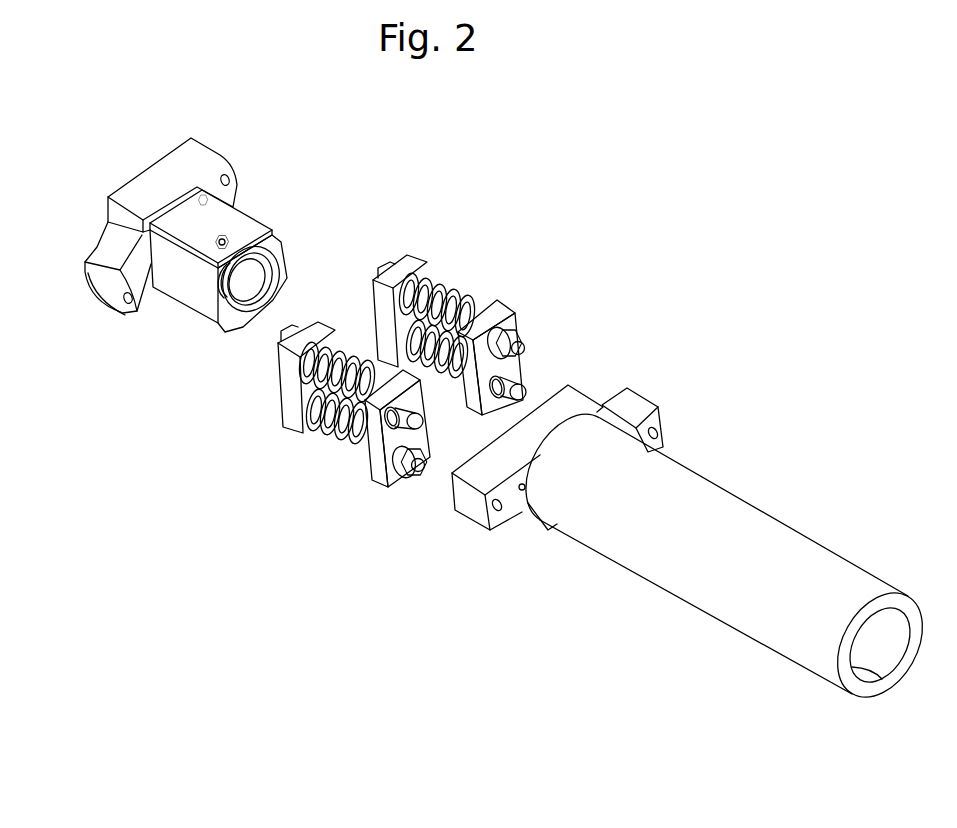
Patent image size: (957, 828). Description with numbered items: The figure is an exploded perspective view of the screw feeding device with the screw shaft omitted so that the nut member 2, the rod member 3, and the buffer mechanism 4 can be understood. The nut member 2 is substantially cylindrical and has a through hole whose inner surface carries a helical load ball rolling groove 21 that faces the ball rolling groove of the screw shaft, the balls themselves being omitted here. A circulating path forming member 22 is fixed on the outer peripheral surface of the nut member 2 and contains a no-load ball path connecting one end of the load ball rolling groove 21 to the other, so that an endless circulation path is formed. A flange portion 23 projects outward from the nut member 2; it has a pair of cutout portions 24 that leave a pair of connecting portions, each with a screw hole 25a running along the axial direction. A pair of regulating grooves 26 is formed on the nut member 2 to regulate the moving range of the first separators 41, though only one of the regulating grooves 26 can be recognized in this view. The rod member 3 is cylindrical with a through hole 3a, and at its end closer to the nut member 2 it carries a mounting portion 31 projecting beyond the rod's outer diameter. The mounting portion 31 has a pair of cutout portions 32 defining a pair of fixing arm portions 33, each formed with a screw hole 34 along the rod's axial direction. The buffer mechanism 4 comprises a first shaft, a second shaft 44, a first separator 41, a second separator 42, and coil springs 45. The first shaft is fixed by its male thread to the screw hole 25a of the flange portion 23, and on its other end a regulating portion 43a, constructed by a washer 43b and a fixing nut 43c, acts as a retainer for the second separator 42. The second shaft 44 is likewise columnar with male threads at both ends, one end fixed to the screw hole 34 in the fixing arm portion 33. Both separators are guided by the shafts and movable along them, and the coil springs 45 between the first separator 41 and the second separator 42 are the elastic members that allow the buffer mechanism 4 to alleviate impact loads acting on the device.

The nut member 2 is at (186, 117).
The load ball rolling groove 21 is at (246, 307).
The circulating path forming member 22 is at (240, 217).
The flange portion 23 is at (157, 183).
The cutout portion 24 is at (112, 250).
The screw hole 25a is at (232, 176).
The regulating groove 26 is at (160, 285).
The rod member 3 is at (696, 525).
The through hole 3a is at (880, 674).
The mounting portion 31 is at (593, 465).
The cutout portion 32 is at (617, 402).
The fixing arm portion 33 is at (660, 421).
The screw hole 34 is at (521, 494).
The buffer mechanism 4 is at (504, 214).
The first separator 41 is at (419, 248).
The second separator 42 is at (507, 299).
The regulating portion 43a is at (478, 429).
The washer 43b is at (403, 483).
The fixing nut 43c is at (462, 439).
The second shaft 44 is at (520, 379).
The coil spring 45 is at (456, 291).